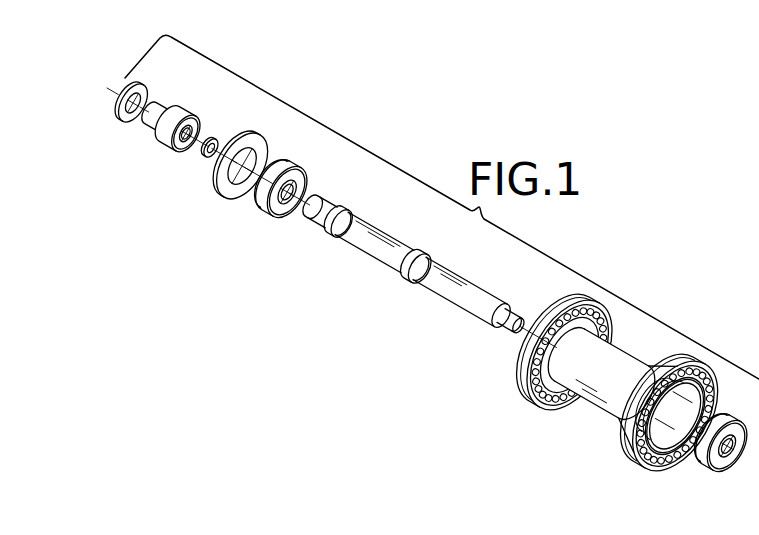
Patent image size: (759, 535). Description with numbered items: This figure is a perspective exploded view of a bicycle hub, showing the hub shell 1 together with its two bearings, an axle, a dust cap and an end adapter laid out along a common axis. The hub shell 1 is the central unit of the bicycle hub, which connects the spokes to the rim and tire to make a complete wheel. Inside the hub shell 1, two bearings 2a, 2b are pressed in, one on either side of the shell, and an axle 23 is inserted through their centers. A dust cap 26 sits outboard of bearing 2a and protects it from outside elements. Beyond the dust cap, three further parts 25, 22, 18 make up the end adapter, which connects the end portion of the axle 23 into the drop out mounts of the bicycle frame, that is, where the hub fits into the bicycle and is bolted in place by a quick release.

The hub shell 1 is at (592, 407).
The bearing 2a is at (266, 213).
The bearing 2b is at (709, 469).
The end adapter part 18 is at (205, 158).
The end adapter part 22 is at (161, 146).
The axle 23 is at (378, 260).
The end adapter part 25 is at (117, 120).
The dust cap 26 is at (226, 199).